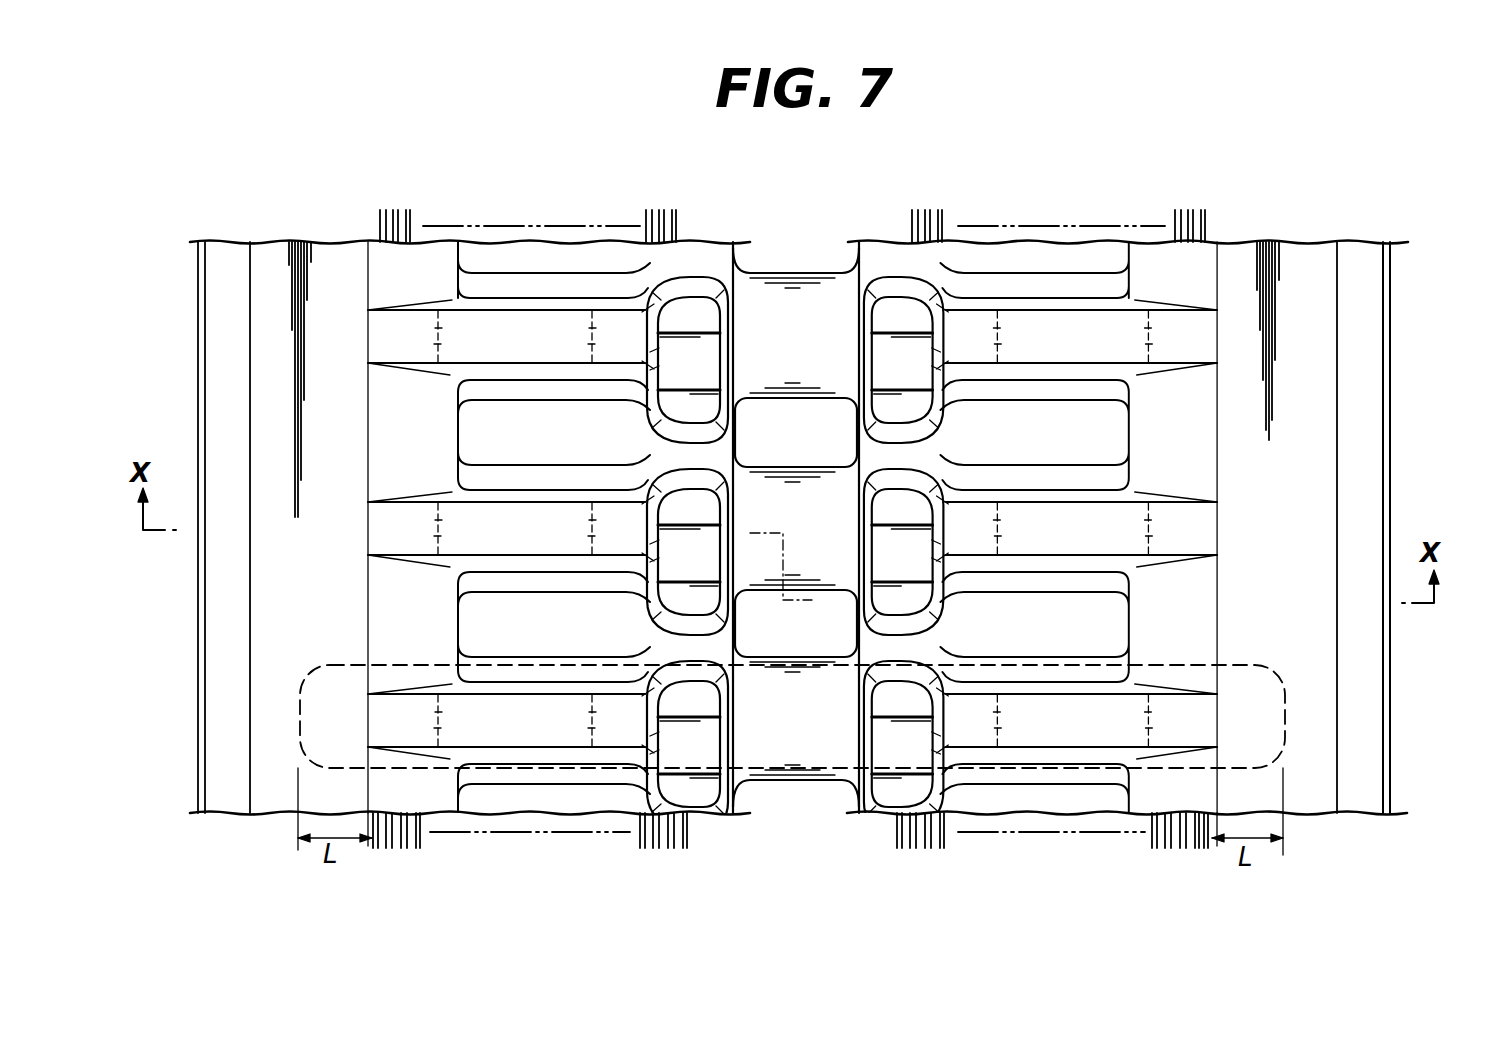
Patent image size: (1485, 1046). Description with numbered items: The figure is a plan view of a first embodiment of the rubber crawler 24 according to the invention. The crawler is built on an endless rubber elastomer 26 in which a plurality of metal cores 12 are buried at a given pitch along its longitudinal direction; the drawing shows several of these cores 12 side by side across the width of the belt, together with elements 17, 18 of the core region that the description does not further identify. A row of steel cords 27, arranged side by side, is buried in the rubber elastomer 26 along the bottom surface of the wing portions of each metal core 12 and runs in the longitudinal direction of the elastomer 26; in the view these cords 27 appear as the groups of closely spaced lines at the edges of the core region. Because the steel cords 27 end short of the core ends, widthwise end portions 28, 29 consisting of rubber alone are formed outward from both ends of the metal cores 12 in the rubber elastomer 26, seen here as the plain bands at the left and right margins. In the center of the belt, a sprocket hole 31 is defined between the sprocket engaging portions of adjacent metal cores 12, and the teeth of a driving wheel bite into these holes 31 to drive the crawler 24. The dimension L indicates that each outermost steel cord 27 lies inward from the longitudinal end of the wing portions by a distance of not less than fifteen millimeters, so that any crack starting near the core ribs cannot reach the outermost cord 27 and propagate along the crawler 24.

The metal core 12 is at (1041, 772).
The block 17 is at (898, 738).
The block 18 is at (690, 750).
The rubber crawler 24 is at (1392, 450).
The rubber elastomer 26 is at (1160, 258).
The steel cords 27 is at (378, 228).
The widthwise end portion 28 is at (1315, 783).
The widthwise end portion 29 is at (270, 785).
The sprocket hole 31 is at (793, 420).